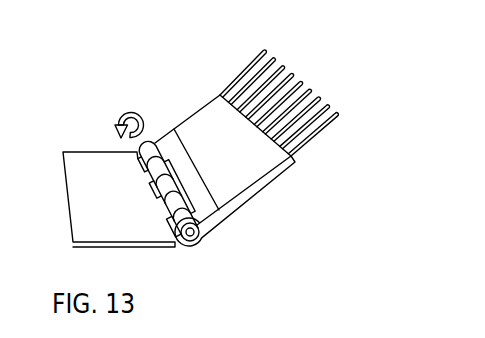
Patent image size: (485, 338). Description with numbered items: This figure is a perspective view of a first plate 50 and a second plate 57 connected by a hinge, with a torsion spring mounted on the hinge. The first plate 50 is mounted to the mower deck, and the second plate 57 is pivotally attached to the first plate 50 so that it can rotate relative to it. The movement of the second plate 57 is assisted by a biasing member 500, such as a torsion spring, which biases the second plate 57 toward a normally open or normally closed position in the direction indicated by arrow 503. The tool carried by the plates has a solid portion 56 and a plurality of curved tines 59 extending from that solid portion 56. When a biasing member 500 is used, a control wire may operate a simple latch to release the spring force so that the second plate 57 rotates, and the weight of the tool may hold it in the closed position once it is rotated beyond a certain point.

The first plate 50 is at (80, 170).
The arrow 503 is at (125, 110).
The biasing member 500 is at (162, 175).
The solid portion 56 is at (255, 173).
The second plate 57 is at (201, 163).
The curved tines 59 is at (328, 125).